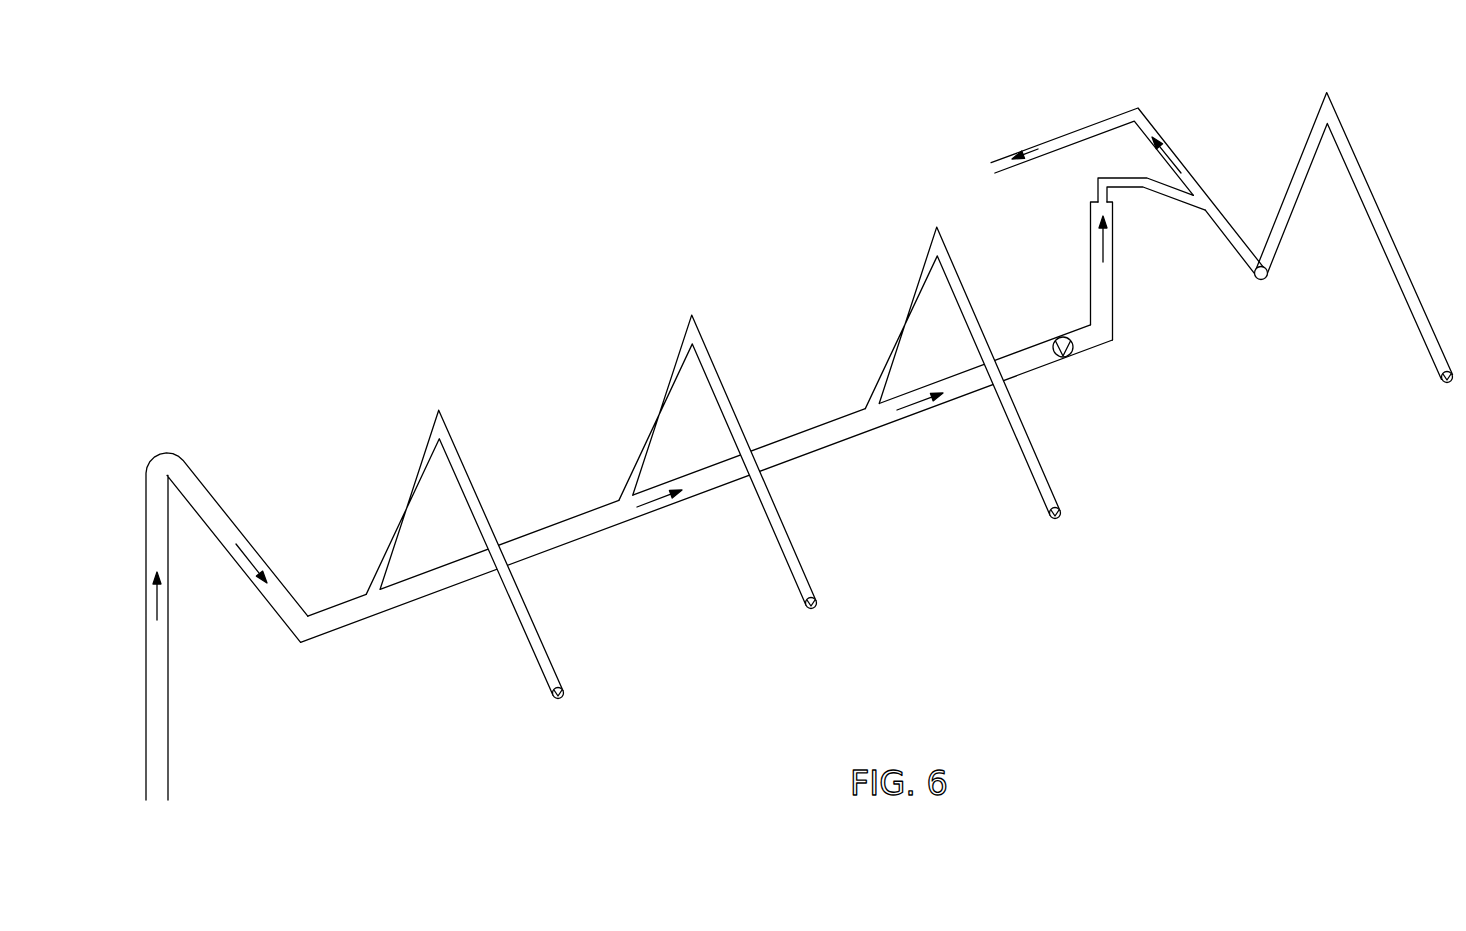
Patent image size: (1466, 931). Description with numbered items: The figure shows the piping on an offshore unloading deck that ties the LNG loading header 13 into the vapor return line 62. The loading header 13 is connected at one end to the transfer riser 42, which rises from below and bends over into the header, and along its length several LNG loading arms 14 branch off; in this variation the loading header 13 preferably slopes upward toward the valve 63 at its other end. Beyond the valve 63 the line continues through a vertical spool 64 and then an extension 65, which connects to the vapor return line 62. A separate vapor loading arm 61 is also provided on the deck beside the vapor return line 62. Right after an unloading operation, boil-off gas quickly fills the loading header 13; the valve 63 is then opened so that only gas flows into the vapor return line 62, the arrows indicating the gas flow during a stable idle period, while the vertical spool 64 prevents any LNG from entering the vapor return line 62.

The loading header 13 is at (600, 530).
The loading arms 14 is at (550, 625).
The transfer riser 42 is at (168, 683).
The vapor loading arm 61 is at (1398, 318).
The vapor return line 62 is at (1079, 130).
The valve 63 is at (1071, 352).
The vertical spool 64 is at (1092, 278).
The extension 65 is at (1152, 192).